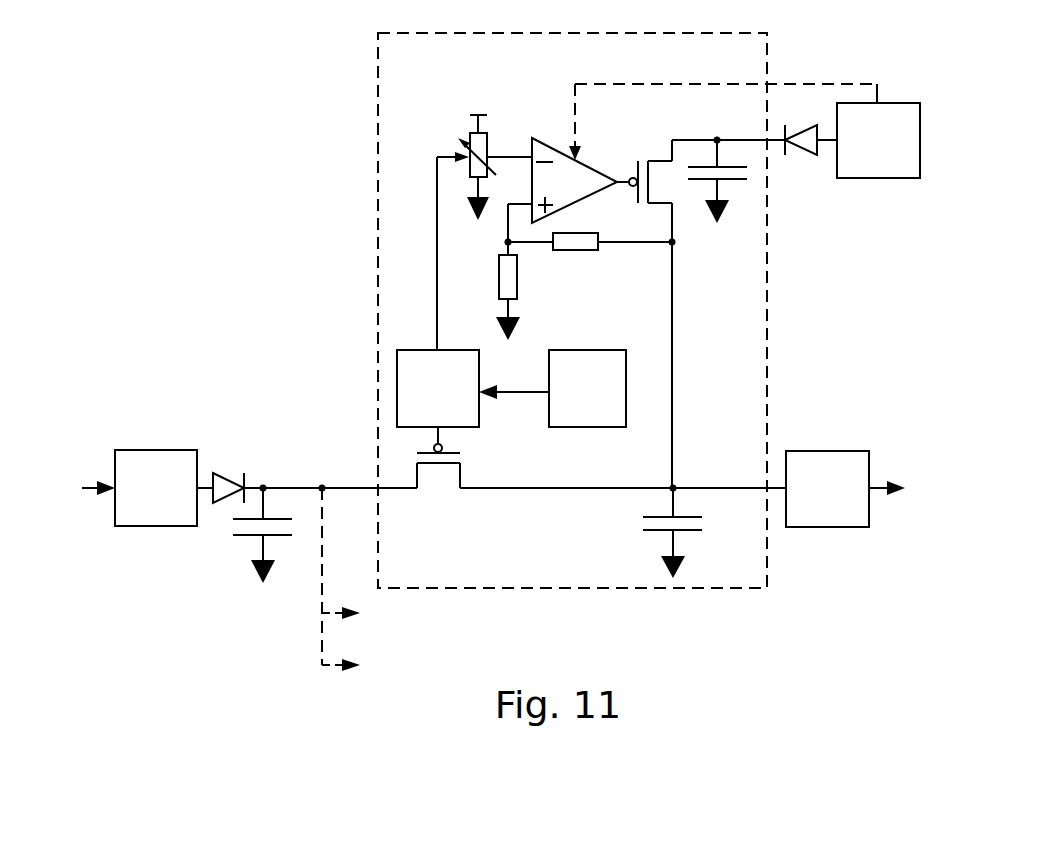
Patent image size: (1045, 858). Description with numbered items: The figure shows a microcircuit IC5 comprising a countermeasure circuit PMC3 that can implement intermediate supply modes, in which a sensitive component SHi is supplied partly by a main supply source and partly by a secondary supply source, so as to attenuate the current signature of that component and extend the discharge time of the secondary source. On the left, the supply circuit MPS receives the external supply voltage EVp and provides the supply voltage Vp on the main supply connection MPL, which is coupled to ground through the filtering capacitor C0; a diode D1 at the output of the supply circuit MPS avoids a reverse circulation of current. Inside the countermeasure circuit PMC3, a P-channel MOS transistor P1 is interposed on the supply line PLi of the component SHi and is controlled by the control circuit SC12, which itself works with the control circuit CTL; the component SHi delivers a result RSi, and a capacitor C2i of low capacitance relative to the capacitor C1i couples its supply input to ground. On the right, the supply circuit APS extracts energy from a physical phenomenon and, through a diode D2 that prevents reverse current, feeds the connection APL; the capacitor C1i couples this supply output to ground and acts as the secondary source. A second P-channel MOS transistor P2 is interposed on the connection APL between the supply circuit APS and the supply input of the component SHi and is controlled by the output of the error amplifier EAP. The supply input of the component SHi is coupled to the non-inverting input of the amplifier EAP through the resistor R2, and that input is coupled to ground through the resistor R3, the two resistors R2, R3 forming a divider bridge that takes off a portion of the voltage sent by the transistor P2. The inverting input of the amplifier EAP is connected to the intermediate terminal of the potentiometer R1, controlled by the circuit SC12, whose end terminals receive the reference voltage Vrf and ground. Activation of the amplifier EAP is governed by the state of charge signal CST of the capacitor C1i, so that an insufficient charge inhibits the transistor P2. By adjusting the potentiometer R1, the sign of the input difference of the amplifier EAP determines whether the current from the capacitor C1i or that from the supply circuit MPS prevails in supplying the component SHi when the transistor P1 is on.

The microcircuit IC5 is at (219, 136).
The countermeasure circuit PMC3 is at (540, 66).
The state of charge signal CST is at (723, 107).
The supply circuit MPS is at (132, 502).
The external supply voltage EVp is at (71, 488).
The diode D1 is at (213, 503).
The filtering capacitor C0 is at (290, 536).
The main supply connection MPL is at (295, 486).
The supply voltage Vp is at (352, 564).
The P-channel MOS transistor P1 is at (462, 453).
The supply line PLi is at (522, 490).
The capacitor C2i is at (643, 530).
The component SHi is at (806, 502).
The result RSi is at (908, 489).
The control circuit SC12 is at (405, 406).
The control circuit CTL is at (610, 406).
The reference voltage Vrf is at (478, 110).
The potentiometer R1 is at (468, 140).
The error amplifier EAP is at (542, 192).
The P-channel MOS transistor P2 is at (638, 161).
The connection APL is at (728, 128).
The capacitor C1i is at (743, 181).
The diode D2 is at (817, 155).
The supply circuit APS is at (902, 156).
The resistor R2 is at (600, 250).
The resistor R3 is at (518, 275).